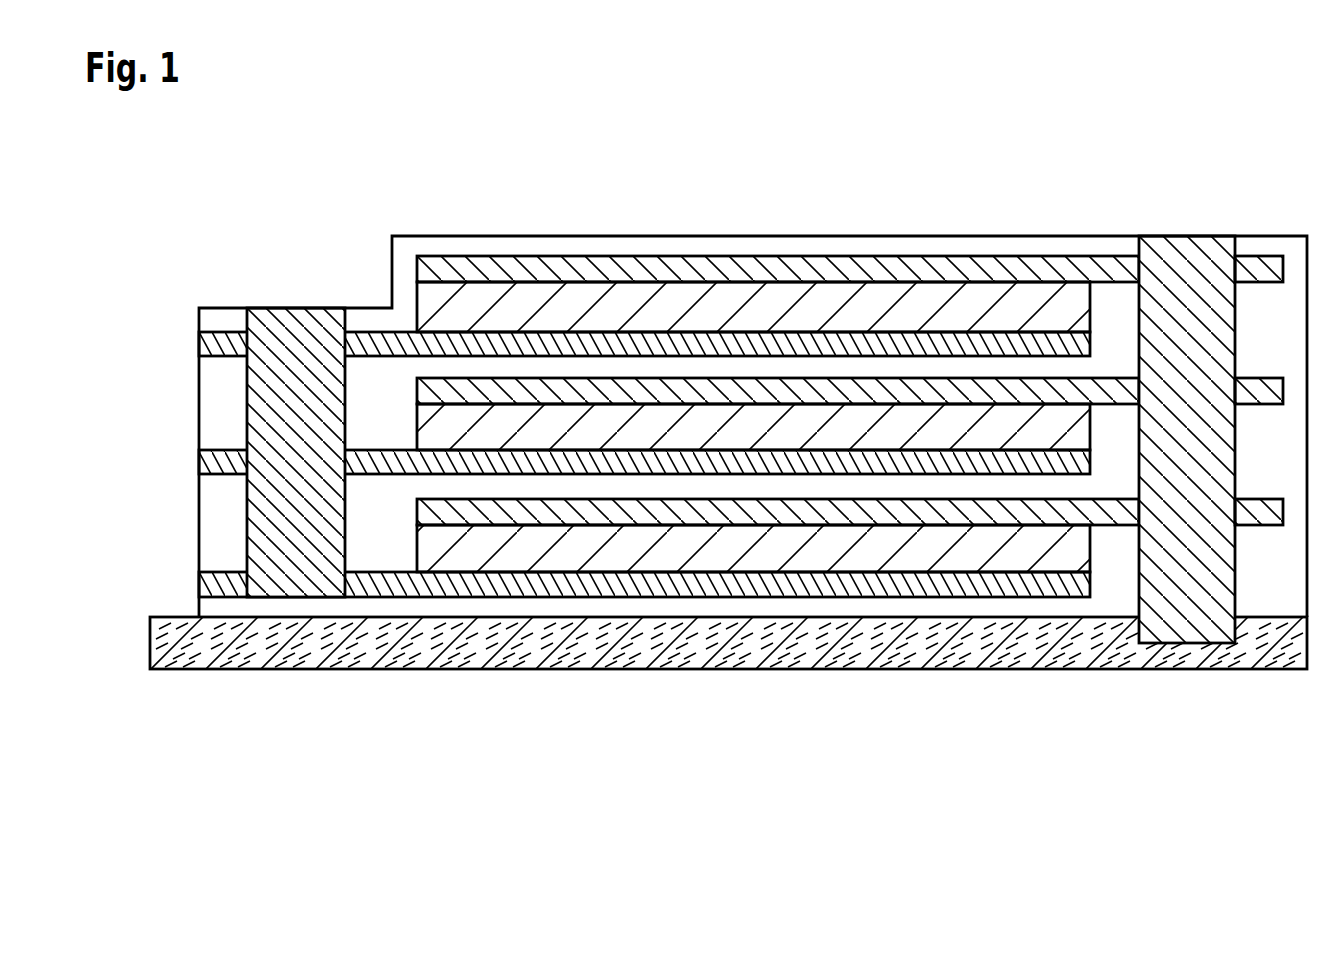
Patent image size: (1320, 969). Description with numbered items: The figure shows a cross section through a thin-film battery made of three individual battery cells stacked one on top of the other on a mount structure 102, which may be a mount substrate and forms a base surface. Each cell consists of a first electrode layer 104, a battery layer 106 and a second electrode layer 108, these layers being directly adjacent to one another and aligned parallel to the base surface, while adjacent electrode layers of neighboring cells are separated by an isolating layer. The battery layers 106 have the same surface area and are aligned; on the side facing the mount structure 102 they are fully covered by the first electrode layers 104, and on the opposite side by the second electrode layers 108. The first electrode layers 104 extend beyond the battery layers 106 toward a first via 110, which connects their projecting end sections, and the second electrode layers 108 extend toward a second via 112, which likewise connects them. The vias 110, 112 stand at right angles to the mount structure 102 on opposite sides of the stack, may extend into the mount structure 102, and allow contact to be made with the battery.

The mount structure 102 is at (297, 658).
The first electrode layer 104 is at (472, 588).
The battery layer 106 is at (1072, 547).
The second electrode layer 108 is at (896, 513).
The first via 110 is at (293, 312).
The second via 112 is at (1183, 250).